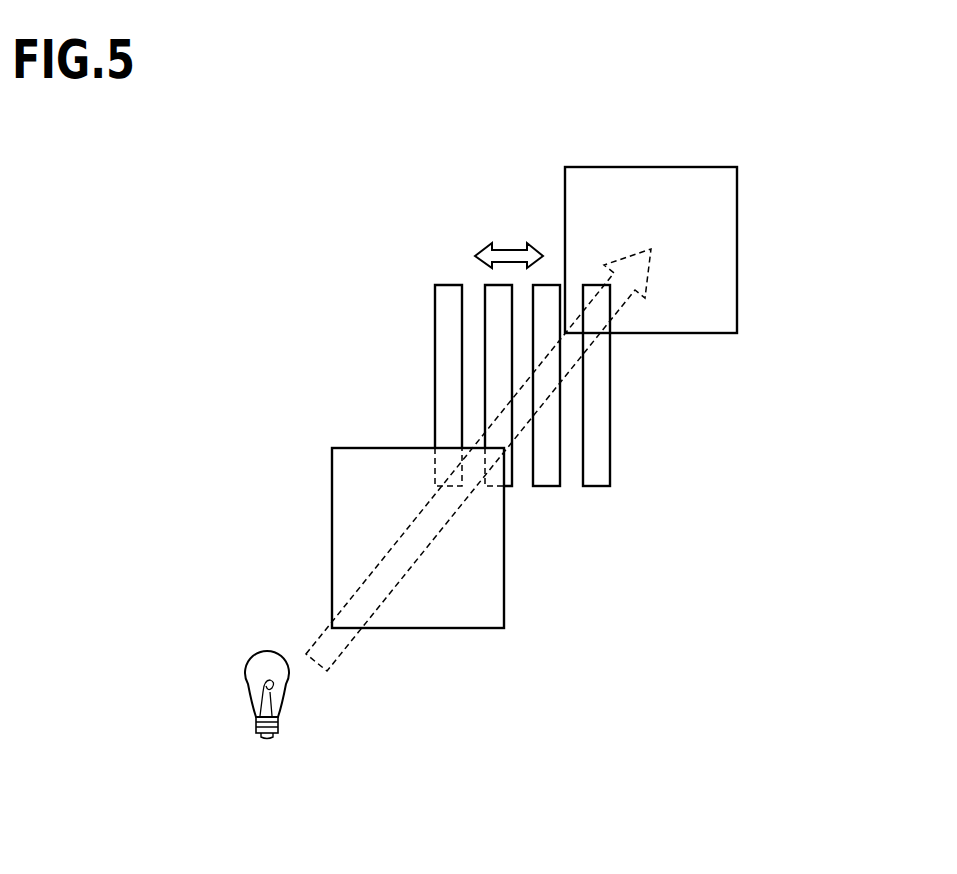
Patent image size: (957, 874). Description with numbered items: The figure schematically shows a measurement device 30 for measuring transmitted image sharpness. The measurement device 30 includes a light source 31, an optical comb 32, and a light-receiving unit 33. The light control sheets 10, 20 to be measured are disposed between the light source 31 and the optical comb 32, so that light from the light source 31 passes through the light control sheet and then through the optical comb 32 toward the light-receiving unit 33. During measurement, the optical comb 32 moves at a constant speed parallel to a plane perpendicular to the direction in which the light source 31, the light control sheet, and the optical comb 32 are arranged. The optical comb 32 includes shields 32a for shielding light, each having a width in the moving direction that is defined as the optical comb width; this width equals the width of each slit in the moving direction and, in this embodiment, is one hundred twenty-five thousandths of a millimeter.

The measurement device 30 is at (405, 166).
The light source 31 is at (240, 672).
The optical comb 32 is at (520, 361).
The shield 32a is at (436, 285).
The light-receiving unit 33 is at (737, 250).
The light control sheet 10 is at (469, 538).
The light control sheet 20 is at (504, 572).